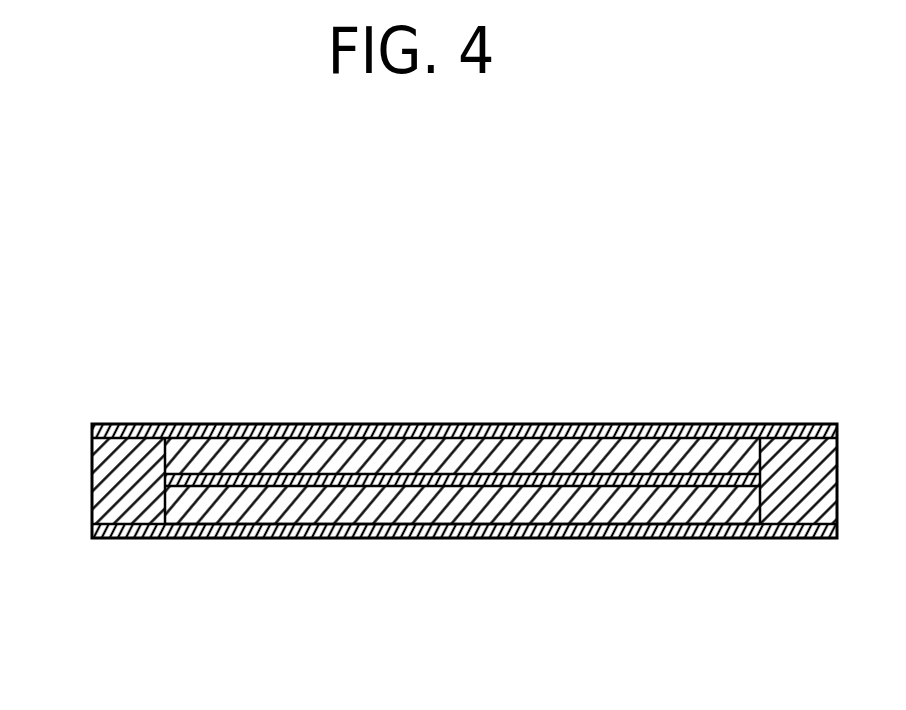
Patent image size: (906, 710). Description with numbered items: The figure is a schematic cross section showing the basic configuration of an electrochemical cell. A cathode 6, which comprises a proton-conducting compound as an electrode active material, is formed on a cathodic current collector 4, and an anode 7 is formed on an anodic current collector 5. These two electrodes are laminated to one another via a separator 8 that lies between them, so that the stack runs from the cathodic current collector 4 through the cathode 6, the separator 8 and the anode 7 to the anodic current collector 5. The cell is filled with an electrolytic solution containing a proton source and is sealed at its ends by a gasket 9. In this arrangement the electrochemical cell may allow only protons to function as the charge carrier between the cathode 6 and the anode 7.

The cathodic current collector 4 is at (307, 424).
The anodic current collector 5 is at (360, 540).
The cathode 6 is at (527, 452).
The anode 7 is at (530, 538).
The separator 8 is at (723, 475).
The gasket 9 is at (150, 506).